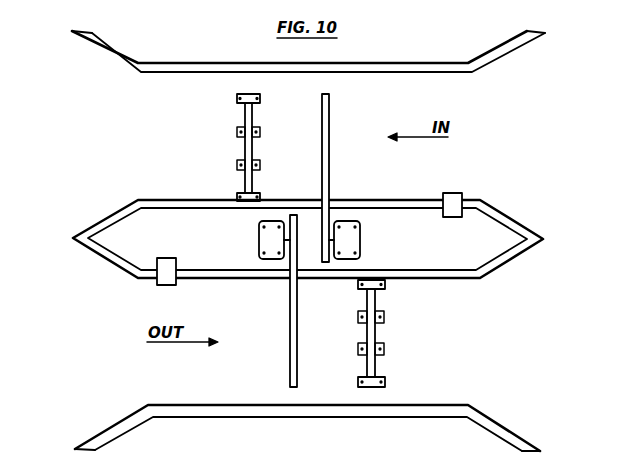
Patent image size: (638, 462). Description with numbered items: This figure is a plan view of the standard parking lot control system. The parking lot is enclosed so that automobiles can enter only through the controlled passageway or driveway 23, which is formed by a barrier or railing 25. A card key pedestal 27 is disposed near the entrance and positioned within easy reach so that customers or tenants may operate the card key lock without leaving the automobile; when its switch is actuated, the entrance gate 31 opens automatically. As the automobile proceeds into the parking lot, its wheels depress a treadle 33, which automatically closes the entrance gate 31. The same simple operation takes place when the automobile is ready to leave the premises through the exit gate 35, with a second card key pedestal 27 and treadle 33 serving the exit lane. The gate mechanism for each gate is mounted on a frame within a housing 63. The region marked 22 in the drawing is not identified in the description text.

The electrode plate / band 25 is at (455, 63).
The connector box 27 is at (181, 258).
The clamp bracket 33 is at (243, 148).
The baffle plate 31 is at (331, 148).
The baffle plate 35 is at (291, 312).
The insulator block 63 is at (361, 248).
The inlet chamber 23 is at (507, 148).
The outlet chamber 22 is at (252, 386).